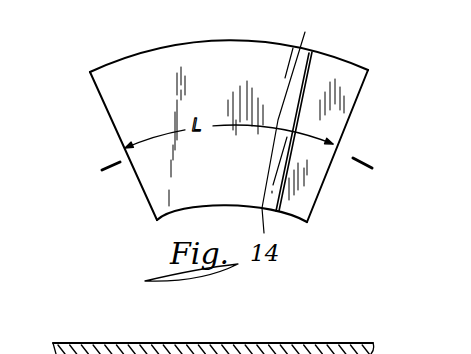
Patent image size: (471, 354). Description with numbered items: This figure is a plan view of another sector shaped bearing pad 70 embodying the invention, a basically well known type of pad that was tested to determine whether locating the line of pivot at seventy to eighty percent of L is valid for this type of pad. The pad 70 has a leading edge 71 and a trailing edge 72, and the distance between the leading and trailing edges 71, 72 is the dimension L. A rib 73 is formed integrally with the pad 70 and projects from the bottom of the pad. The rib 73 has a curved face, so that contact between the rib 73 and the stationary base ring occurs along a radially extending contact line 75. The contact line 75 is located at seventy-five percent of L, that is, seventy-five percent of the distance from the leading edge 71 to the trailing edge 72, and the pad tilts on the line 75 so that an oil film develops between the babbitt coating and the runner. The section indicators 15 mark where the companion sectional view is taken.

The curved panel segment 70 is at (132, 107).
The left side edge of panel 71 is at (97, 87).
The right side edge of panel 72 is at (369, 84).
The reinforcing band 73 is at (310, 66).
The fold line 75 is at (288, 78).
The viewing direction indicator 15 is at (117, 174).